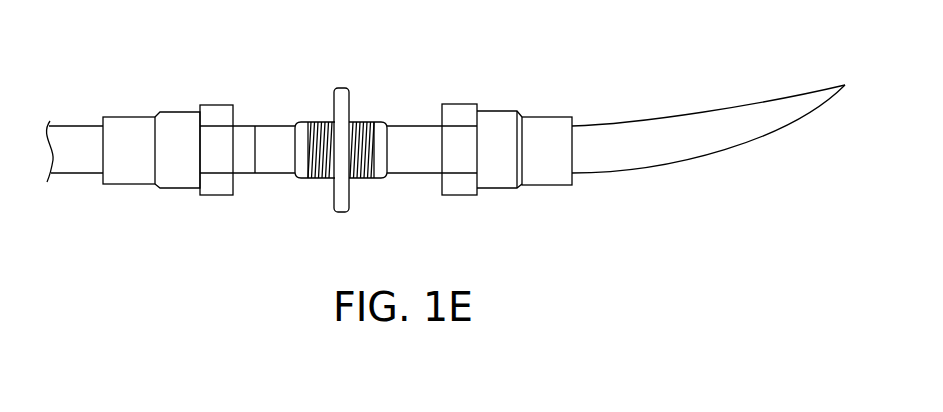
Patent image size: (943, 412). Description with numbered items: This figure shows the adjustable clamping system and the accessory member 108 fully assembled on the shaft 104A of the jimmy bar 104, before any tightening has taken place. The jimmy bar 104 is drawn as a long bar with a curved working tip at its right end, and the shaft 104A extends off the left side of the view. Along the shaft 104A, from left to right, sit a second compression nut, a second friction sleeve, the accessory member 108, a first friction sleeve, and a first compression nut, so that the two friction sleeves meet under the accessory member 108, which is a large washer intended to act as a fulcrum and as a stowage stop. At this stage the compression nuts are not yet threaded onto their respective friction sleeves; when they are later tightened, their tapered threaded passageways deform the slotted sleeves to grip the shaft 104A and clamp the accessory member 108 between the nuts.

The shaft 104A is at (74, 124).
The accessory member 108 is at (340, 88).
The jimmy bar 104 is at (703, 175).